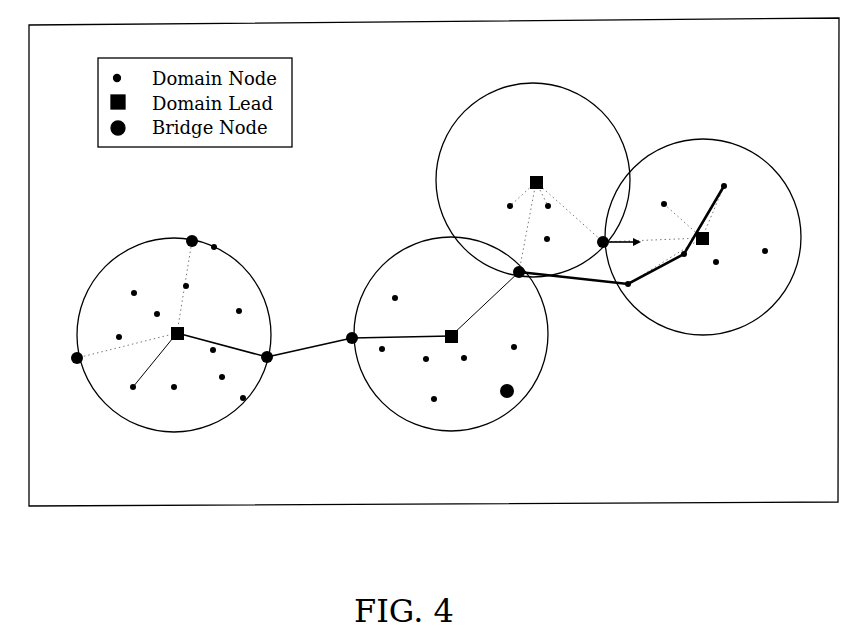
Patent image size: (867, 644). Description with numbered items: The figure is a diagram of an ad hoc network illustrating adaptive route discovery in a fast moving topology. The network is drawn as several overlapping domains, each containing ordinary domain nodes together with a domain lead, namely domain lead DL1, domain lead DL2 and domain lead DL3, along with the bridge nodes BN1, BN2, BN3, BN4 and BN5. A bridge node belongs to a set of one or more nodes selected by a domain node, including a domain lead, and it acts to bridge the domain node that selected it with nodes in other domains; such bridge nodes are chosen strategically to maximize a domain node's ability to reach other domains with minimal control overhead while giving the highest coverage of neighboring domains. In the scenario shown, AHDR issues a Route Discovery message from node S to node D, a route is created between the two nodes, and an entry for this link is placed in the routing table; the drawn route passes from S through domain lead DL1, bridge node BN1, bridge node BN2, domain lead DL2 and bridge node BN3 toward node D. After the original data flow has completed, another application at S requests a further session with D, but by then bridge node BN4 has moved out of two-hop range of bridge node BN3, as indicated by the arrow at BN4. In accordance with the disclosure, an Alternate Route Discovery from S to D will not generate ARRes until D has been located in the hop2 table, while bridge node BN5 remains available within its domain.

The domain lead DL1 is at (186, 347).
The domain lead DL2 is at (467, 340).
The domain lead DL3 is at (517, 172).
The bridge node BN1 is at (276, 373).
The bridge node BN2 is at (337, 329).
The bridge node BN3 is at (498, 278).
The bridge node BN4 is at (618, 254).
The bridge node BN5 is at (484, 396).
The source node S is at (130, 396).
The destination node D is at (719, 179).